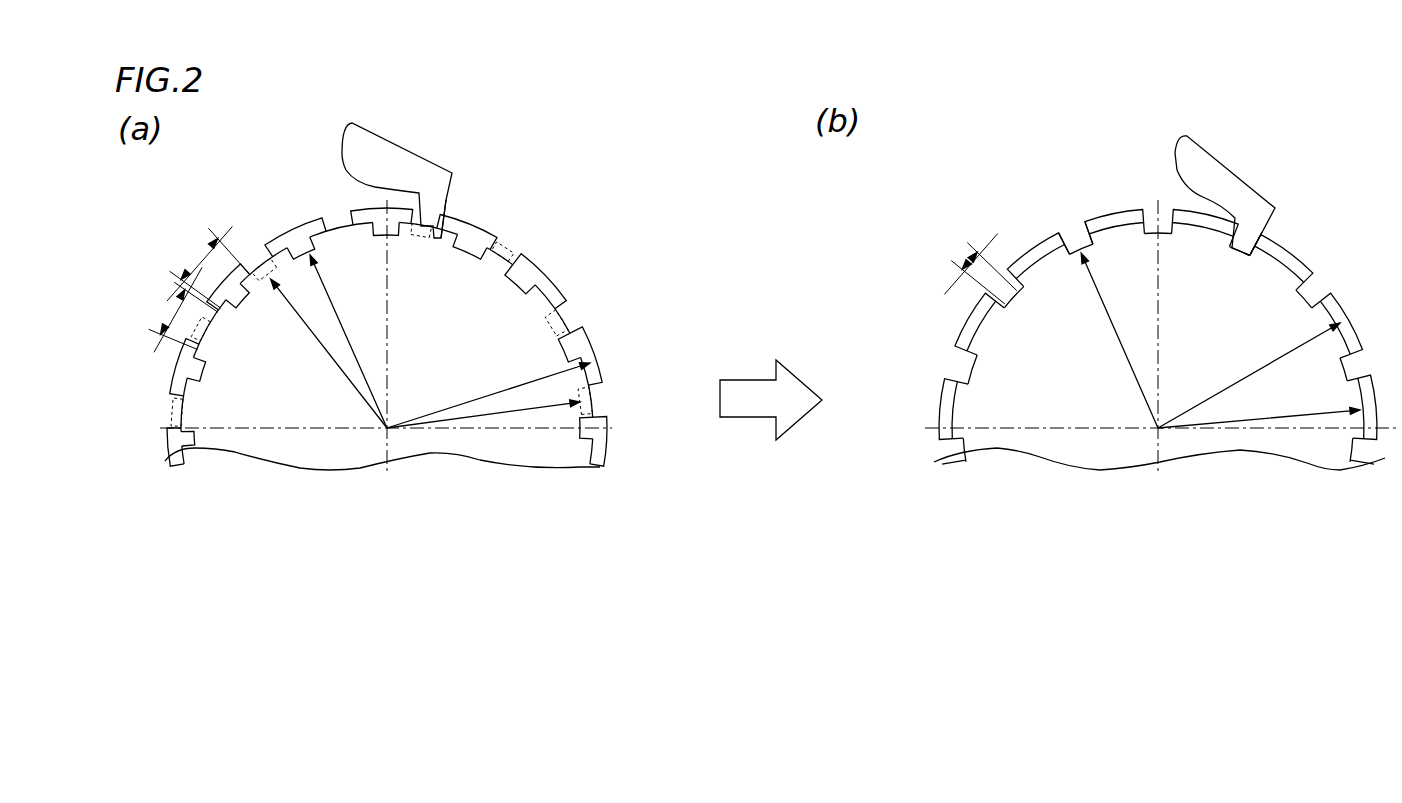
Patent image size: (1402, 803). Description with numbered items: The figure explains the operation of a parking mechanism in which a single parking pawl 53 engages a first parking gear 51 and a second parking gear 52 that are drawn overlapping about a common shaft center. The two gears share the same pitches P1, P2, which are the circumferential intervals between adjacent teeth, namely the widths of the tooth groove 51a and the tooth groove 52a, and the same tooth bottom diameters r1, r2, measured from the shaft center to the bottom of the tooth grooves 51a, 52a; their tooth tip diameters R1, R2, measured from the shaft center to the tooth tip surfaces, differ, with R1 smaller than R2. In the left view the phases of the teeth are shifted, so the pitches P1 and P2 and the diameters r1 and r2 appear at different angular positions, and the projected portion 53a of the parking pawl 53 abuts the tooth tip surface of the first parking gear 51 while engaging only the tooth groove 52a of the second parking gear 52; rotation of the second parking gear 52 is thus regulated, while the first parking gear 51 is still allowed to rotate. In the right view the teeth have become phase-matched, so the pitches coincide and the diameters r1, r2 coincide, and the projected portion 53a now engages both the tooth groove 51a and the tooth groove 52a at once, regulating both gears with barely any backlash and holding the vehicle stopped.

The first parking gear 51 is at (582, 328).
The tooth groove 51a is at (554, 284).
The second parking gear 52 is at (298, 228).
The tooth groove 52a is at (512, 250).
The parking pawl 53 is at (380, 157).
The projected portion 53a is at (445, 208).
The tooth bottom diameter r1 is at (744, 340).
The tooth bottom diameter r2 is at (329, 353).
The tooth tip diameter R1 is at (873, 405).
The tooth tip diameter R2 is at (863, 375).
The pitch P1 is at (208, 240).
The pitch P2 is at (175, 290).